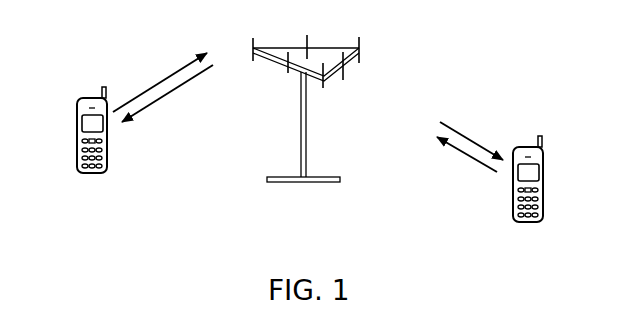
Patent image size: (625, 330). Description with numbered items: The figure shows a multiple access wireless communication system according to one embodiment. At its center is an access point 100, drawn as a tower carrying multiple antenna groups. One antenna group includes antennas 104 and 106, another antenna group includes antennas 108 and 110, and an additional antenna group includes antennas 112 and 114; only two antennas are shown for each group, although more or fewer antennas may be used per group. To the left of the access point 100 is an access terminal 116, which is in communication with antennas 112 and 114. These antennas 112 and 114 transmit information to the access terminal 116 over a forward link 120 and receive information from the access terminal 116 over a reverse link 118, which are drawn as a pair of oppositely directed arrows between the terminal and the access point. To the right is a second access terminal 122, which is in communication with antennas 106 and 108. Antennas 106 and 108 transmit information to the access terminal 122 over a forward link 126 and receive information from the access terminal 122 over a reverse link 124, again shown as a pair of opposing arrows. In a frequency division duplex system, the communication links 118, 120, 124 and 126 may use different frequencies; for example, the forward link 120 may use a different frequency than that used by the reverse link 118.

The access point 100 is at (308, 182).
The antenna 104 is at (325, 88).
The antenna 106 is at (344, 73).
The antenna 108 is at (362, 52).
The antenna 110 is at (308, 36).
The antenna 112 is at (252, 39).
The antenna 114 is at (287, 73).
The access terminal 116 is at (77, 112).
The reverse link 118 is at (168, 78).
The forward link 120 is at (152, 104).
The access terminal 122 is at (543, 167).
The reverse link 124 is at (475, 165).
The forward link 126 is at (470, 137).